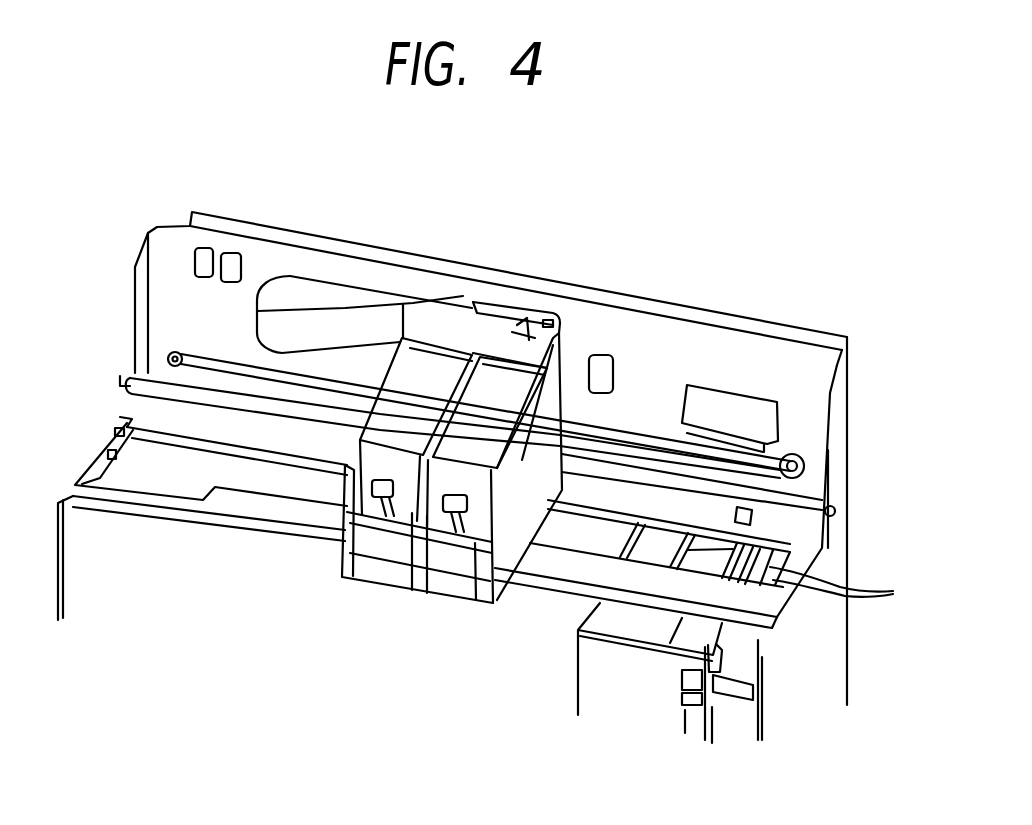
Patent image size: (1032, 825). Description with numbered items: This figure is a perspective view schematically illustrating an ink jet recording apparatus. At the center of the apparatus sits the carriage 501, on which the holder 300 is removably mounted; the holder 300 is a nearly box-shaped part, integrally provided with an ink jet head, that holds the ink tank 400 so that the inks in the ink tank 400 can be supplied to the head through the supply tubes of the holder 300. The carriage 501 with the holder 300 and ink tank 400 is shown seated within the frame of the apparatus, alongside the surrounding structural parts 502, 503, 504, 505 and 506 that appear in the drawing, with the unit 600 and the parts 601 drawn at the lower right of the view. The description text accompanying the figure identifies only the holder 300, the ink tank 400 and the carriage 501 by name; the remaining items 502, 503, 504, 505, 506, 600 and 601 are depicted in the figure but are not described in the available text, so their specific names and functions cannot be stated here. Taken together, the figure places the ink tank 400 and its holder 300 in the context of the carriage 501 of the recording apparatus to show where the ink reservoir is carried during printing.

The holder 300 is at (447, 553).
The ink tank 400 is at (497, 395).
The carriage 501 is at (517, 537).
The chassis 502 is at (637, 432).
The guide shaft 503 is at (167, 356).
The guide rail 504 is at (317, 418).
The flexible cable 505 is at (290, 290).
The platen 506 is at (178, 473).
The sheet feeding unit 600 is at (606, 679).
The flexible cable 601 is at (813, 578).